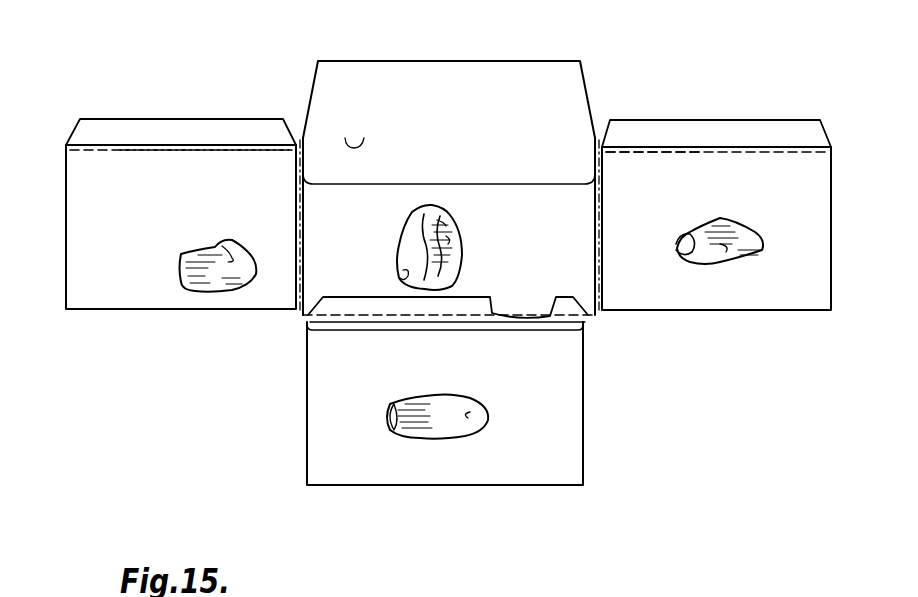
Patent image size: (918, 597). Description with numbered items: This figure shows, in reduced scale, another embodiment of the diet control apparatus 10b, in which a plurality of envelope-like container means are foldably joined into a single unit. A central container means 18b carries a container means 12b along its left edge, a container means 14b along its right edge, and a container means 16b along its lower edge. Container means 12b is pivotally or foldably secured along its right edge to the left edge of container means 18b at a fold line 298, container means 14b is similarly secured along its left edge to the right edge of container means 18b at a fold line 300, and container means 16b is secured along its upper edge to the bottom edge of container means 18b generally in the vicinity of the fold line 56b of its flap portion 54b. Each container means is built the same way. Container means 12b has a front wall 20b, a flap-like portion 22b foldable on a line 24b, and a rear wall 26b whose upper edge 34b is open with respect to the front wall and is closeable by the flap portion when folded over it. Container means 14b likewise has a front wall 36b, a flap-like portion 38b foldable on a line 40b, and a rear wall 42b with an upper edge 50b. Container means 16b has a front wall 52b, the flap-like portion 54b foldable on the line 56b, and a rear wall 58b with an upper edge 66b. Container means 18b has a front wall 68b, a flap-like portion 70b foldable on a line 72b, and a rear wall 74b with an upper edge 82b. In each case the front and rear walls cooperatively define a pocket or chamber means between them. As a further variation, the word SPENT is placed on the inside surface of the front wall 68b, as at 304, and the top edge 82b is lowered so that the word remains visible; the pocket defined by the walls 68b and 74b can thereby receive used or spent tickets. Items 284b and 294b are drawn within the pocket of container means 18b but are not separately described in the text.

The diet control apparatus 10b is at (655, 41).
The container means 12b is at (96, 313).
The container means 14b is at (763, 313).
The container means 16b is at (342, 488).
The container means 18b is at (313, 88).
The front wall 20b is at (191, 258).
The flap-like portion 22b is at (87, 130).
The fold line 24b is at (181, 145).
The rear wall 26b is at (233, 258).
The upper edge 34b is at (123, 152).
The front wall 36b is at (681, 242).
The flap-like portion 38b is at (767, 135).
The fold line 40b is at (704, 146).
The rear wall 42b is at (725, 248).
The upper edge 50b is at (647, 155).
The front wall 52b is at (390, 430).
The flap-like portion 54b is at (312, 310).
The fold line 56b is at (398, 320).
The rear wall 58b is at (467, 416).
The upper edge 66b is at (347, 330).
The front wall 68b is at (405, 235).
The flap-like portion 70b is at (530, 73).
The fold line 72b is at (360, 138).
The rear wall 74b is at (405, 273).
The upper edge 82b is at (571, 178).
The food item portion 284b is at (450, 238).
The food item portion 294b is at (437, 222).
The fold line 298 is at (295, 255).
The fold line 300 is at (597, 250).
The word SPENT 304 is at (508, 163).